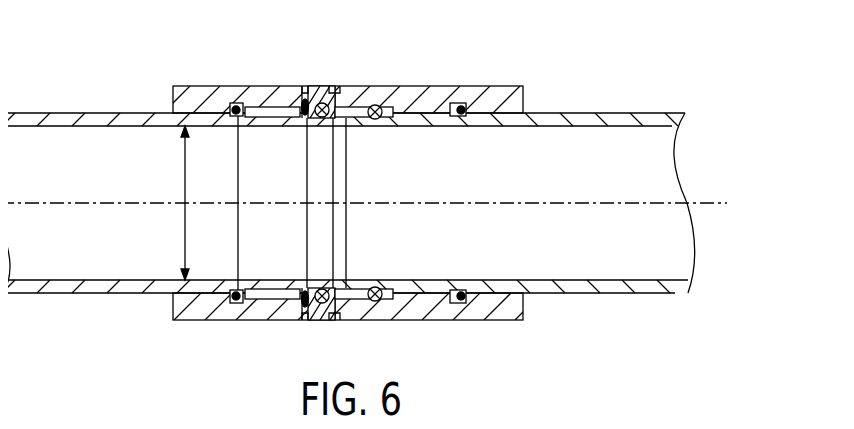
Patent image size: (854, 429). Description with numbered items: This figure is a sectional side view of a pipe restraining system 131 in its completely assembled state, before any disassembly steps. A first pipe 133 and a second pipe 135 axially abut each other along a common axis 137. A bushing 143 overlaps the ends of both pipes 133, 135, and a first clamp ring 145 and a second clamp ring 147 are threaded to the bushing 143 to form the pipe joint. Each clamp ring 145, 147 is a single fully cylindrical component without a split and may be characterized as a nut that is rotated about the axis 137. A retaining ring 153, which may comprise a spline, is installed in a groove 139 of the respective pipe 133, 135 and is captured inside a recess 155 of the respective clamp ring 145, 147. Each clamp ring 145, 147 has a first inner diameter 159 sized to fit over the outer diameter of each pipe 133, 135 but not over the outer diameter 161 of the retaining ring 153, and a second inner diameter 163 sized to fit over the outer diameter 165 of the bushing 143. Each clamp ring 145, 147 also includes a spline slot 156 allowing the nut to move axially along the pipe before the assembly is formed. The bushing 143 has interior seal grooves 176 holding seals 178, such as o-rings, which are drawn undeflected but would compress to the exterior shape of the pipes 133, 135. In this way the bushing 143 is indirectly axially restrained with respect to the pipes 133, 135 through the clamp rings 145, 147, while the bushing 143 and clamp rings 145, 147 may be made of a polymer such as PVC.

The system 131 is at (668, 58).
The first pipe 133 is at (62, 118).
The second pipe 135 is at (605, 113).
The axis 137 is at (715, 201).
The groove 139 is at (237, 103).
The bushing 143 is at (347, 310).
The first clamp ring 145 is at (175, 86).
The second clamp ring 147 is at (523, 98).
The retaining ring 153 is at (395, 86).
The recess 155 is at (233, 108).
The spline slot 156 is at (425, 292).
The first inner diameter 159 is at (185, 160).
The outer diameter of the retaining ring 161 is at (238, 190).
The second inner diameter 163 is at (348, 201).
The outer diameter of the bushing 165 is at (307, 140).
The interior seal grooves 176 is at (388, 116).
The seals 178 is at (372, 118).